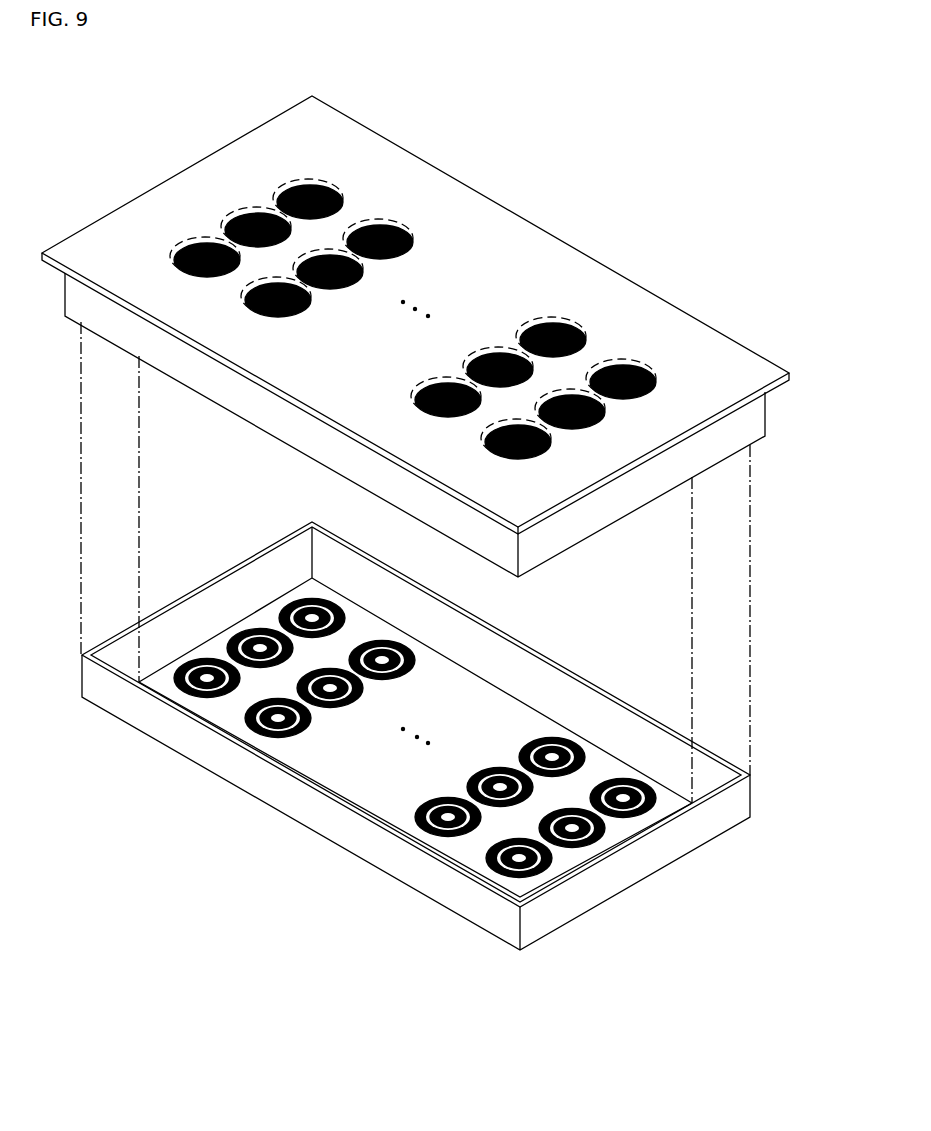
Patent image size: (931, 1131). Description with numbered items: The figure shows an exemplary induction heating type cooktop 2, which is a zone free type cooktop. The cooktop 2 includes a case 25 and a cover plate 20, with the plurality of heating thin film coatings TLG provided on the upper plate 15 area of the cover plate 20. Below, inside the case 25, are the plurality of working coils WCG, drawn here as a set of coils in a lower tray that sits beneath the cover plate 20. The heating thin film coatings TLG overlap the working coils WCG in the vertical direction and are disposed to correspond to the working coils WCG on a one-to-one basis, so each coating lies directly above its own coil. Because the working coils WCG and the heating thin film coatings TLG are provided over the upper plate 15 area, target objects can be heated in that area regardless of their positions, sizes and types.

The induction heating type cooktop 2 is at (186, 74).
The upper plate 15 is at (582, 291).
The cover plate 20 is at (749, 310).
The case 25 is at (752, 798).
The heating thin film coatings TLG is at (330, 179).
The working coils WCG is at (430, 837).